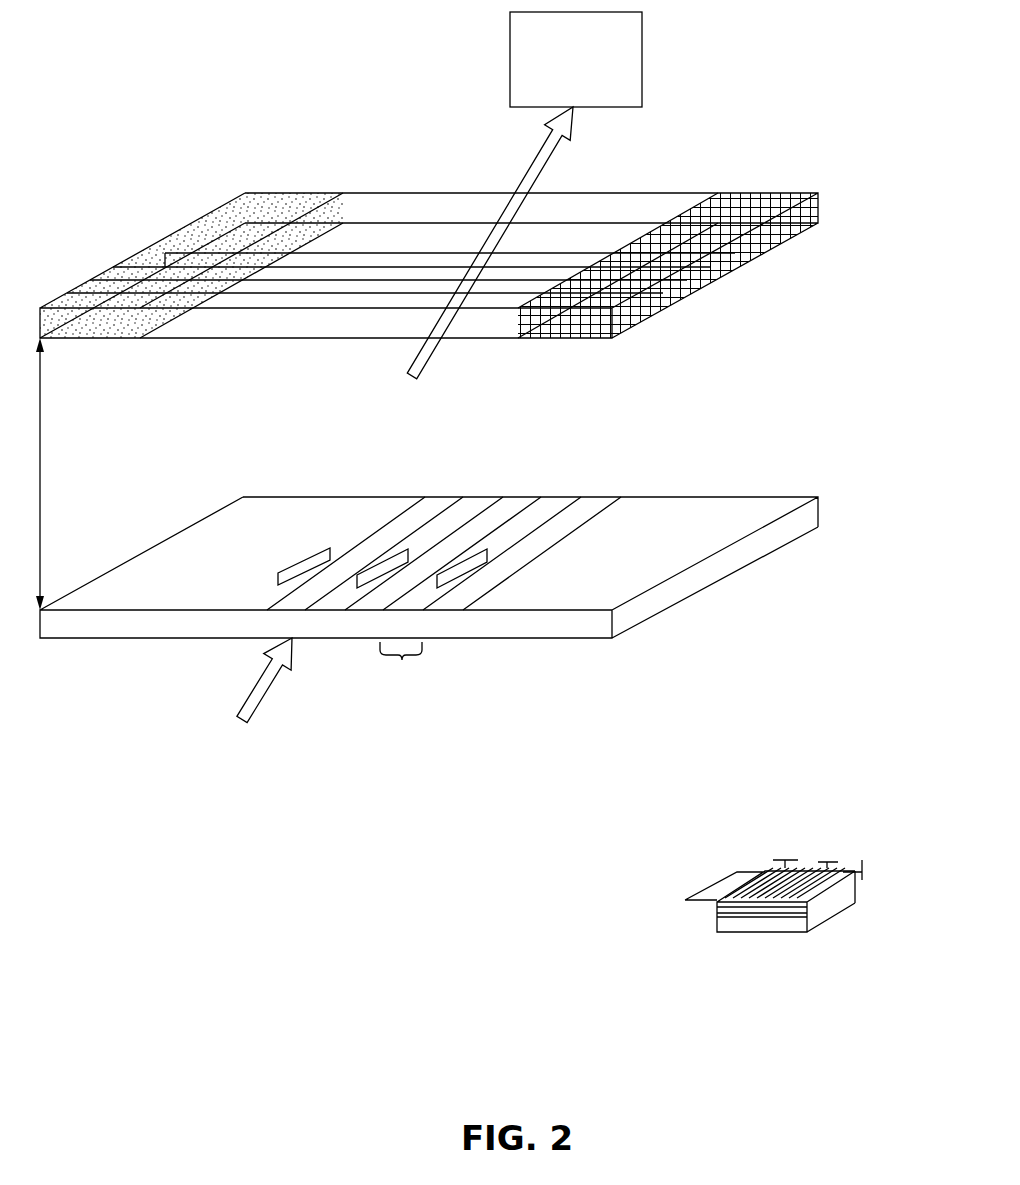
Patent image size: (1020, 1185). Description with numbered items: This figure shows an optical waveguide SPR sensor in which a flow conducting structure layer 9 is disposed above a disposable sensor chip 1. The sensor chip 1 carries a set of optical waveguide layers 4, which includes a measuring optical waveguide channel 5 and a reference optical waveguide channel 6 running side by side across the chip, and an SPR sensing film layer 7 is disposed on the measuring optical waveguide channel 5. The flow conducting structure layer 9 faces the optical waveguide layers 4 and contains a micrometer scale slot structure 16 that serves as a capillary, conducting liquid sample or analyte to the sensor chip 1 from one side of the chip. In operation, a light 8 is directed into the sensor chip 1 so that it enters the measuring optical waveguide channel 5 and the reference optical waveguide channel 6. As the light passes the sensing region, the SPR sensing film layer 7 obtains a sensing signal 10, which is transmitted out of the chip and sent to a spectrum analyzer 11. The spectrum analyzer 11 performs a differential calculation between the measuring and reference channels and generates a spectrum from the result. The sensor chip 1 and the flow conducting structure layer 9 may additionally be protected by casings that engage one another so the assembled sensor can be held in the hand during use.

The sensor chip 1 is at (247, 557).
The optical waveguide layers 4 is at (405, 672).
The measuring optical waveguide channel 5 is at (528, 532).
The reference optical waveguide channel 6 is at (600, 515).
The SPR sensing film layer 7 is at (463, 575).
The light 8 is at (256, 692).
The flow conducting structure layer 9 is at (818, 223).
The sensing signal 10 is at (517, 185).
The spectrum analyzer 11 is at (576, 59).
The micrometer scale slot structure 16 is at (187, 243).